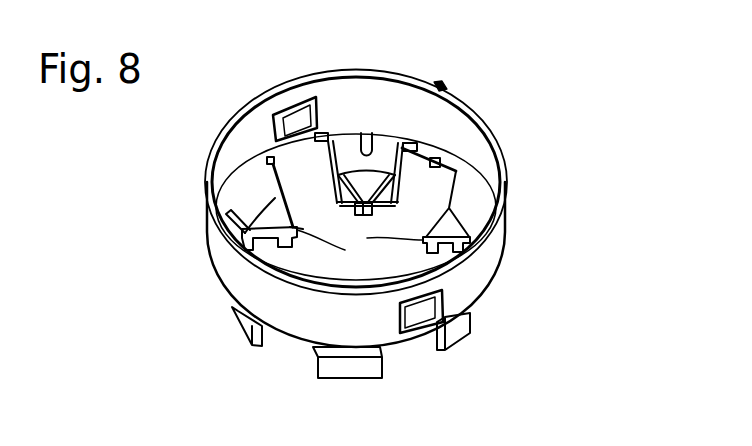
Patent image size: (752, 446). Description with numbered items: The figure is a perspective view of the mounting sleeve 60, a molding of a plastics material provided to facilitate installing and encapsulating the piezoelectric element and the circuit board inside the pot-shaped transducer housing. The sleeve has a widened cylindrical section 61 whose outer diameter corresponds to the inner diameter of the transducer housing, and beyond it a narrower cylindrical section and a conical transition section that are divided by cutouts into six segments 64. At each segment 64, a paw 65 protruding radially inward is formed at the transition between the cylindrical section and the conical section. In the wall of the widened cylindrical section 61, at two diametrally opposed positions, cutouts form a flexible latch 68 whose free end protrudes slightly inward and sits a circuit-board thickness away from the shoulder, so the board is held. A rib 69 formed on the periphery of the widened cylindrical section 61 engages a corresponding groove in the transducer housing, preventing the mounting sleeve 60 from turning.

The mounting sleeve 60 is at (507, 152).
The widened cylindrical section 61 is at (477, 273).
The segments 64 is at (380, 157).
The paw 65 is at (364, 207).
The flexible latch 68 is at (296, 115).
The rib 69 is at (438, 85).